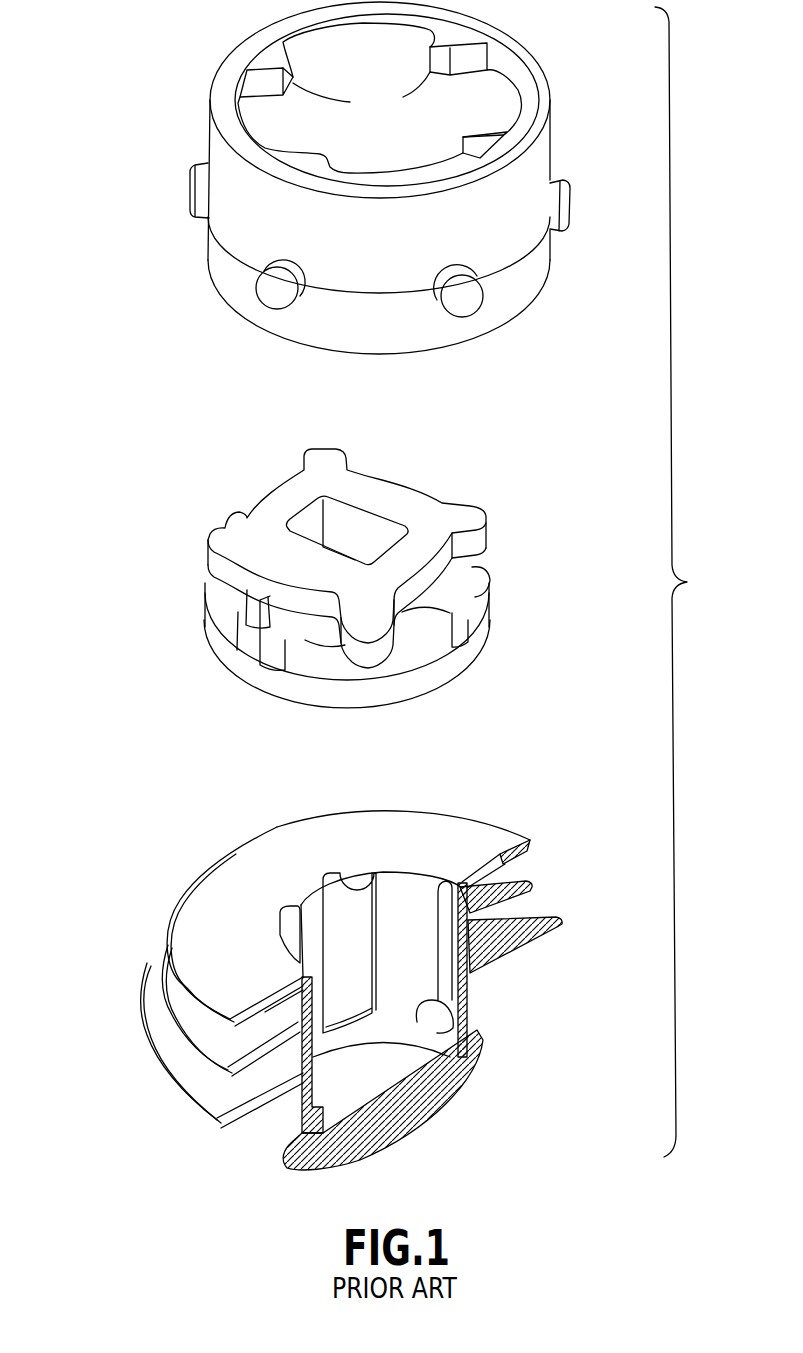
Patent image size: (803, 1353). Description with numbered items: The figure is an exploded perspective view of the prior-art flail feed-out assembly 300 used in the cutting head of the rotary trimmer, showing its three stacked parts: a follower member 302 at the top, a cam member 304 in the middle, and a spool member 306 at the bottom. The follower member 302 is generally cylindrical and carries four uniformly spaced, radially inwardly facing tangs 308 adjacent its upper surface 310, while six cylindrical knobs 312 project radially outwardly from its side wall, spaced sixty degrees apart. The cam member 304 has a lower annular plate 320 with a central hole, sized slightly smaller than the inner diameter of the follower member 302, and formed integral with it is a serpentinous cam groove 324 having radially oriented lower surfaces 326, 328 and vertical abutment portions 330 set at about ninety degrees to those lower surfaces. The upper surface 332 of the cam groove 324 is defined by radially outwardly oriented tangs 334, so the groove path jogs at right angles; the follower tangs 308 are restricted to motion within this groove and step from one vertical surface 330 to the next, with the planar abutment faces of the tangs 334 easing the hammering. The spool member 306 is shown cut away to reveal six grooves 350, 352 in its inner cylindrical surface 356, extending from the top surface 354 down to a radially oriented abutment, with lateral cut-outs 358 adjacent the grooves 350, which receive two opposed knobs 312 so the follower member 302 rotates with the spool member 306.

The flail feed-out assembly 300 is at (382, 599).
The follower member 302 is at (361, 190).
The cam member 304 is at (317, 575).
The spool member 306 is at (294, 982).
The tangs 308 is at (379, 98).
The upper surface 310 is at (533, 90).
The knobs 312 is at (277, 290).
The annular plate 320 is at (450, 670).
The cam groove 324 is at (253, 610).
The lower surface 326 is at (373, 673).
The lower surface 328 is at (247, 643).
The vertical abutment portions 330 is at (427, 627).
The upper surface 332 is at (475, 583).
The tangs 334 is at (325, 460).
The grooves 350 is at (470, 917).
The grooves 352 is at (397, 878).
The top surface 354 is at (367, 856).
The inner cylindrical surface 356 is at (348, 1030).
The lateral cut-outs 358 is at (427, 1017).